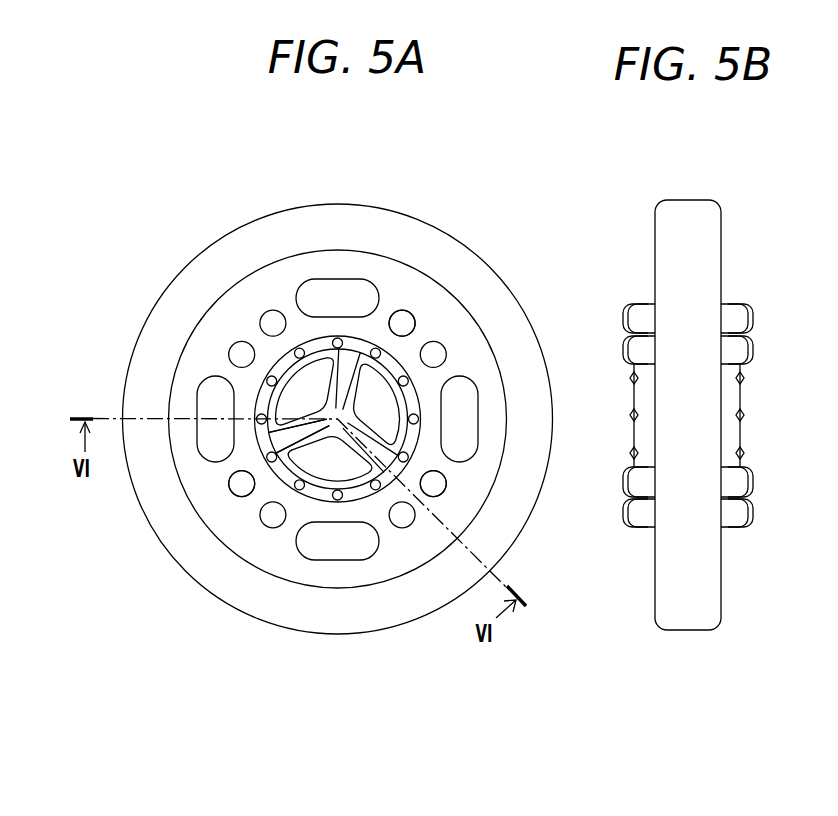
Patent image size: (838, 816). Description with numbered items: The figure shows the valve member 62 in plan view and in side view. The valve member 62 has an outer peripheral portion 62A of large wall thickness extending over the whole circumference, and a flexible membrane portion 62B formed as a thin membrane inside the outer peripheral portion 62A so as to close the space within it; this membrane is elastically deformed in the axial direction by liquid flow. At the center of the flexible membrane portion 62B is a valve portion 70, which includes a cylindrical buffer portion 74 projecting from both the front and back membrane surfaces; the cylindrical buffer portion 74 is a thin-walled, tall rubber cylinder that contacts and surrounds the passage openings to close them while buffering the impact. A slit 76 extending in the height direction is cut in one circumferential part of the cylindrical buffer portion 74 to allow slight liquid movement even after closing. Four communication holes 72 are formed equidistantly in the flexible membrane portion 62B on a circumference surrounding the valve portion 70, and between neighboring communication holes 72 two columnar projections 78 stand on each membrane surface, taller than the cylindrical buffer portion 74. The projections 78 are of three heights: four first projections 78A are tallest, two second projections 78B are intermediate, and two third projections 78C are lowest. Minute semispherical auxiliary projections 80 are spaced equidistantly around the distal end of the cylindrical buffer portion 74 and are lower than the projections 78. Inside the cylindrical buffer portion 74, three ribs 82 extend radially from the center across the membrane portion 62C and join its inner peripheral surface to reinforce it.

In FIG. 5A, the valve member 62 is at (325, 140).
In FIG. 5A, the outer peripheral portion 62A is at (445, 248).
In FIG. 5B, the outer peripheral portion 62A is at (712, 240).
In FIG. 5A, the flexible membrane portion 62B is at (272, 562).
In FIG. 5A, the membrane portion 62C is at (300, 388).
In FIG. 5A, the valve portion 70 is at (422, 387).
In FIG. 5A, the communication hole 72 is at (350, 548).
In FIG. 5A, the cylindrical buffer portion 74 is at (367, 500).
In FIG. 5B, the cylindrical buffer portion 74 is at (638, 433).
In FIG. 5A, the slit 76 is at (292, 458).
In FIG. 5A, the columnar projection 78 is at (270, 315).
In FIG. 5B, the columnar projection 78 is at (623, 318).
In FIG. 5A, the first projection 78A is at (235, 490).
In FIG. 5B, the first projection 78A is at (757, 315).
In FIG. 5A, the second projection 78B is at (440, 490).
In FIG. 5B, the second projection 78B is at (745, 353).
In FIG. 5A, the third projection 78C is at (403, 318).
In FIG. 5B, the third projection 78C is at (740, 323).
In FIG. 5A, the auxiliary projection 80 is at (337, 339).
In FIG. 5B, the auxiliary projection 80 is at (741, 415).
In FIG. 5A, the rib 82 is at (300, 423).